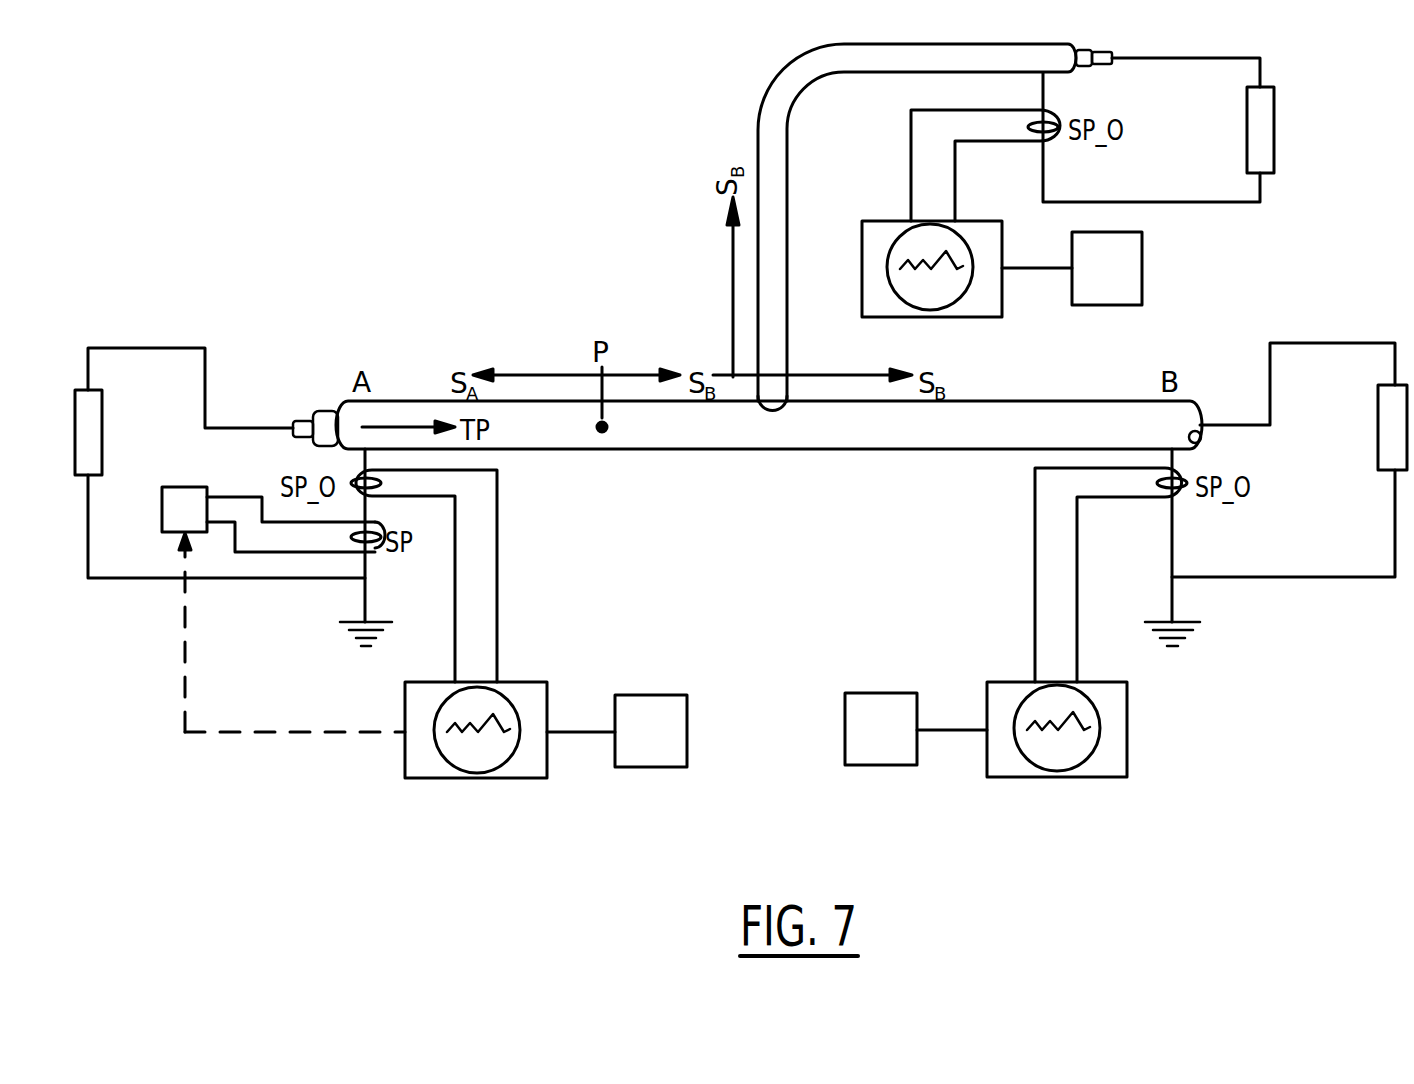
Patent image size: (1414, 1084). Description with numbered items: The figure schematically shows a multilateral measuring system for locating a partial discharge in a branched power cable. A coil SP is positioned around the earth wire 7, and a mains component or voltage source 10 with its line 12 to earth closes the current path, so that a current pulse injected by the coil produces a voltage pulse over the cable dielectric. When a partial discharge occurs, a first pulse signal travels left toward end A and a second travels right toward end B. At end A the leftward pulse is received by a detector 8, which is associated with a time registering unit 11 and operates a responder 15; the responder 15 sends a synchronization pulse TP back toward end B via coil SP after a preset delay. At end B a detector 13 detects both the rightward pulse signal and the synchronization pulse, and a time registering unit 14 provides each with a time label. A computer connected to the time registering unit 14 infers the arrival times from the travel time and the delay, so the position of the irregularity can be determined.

The earth wire 7 is at (366, 566).
The detector 8 is at (505, 770).
The voltage source 10 is at (102, 432).
The time registering unit 11 is at (651, 757).
The line 12 is at (88, 522).
The detector 13 is at (1084, 768).
The time registering unit 14 is at (884, 756).
The responder 15 is at (283, 609).